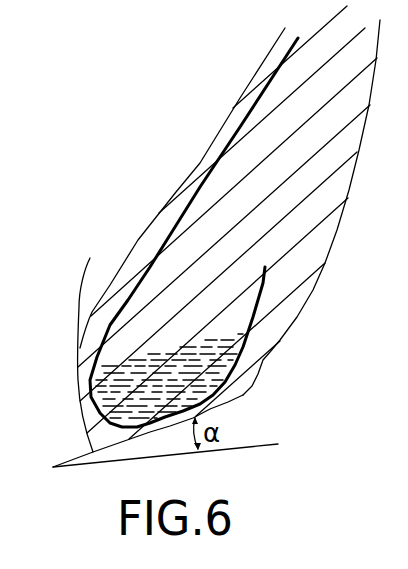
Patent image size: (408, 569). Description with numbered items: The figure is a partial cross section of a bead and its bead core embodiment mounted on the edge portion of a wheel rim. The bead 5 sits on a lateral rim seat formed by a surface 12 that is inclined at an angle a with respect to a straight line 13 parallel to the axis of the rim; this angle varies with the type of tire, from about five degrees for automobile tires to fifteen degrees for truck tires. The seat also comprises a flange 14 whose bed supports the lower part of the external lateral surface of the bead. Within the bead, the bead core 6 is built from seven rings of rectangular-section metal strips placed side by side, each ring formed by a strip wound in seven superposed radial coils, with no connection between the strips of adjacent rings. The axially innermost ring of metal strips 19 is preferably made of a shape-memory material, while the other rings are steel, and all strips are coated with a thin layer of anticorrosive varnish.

The bead 5 is at (174, 192).
The cavity/pocket filled with abradable material 6 is at (150, 343).
The surface 12 is at (121, 441).
The straight line 13 is at (168, 469).
The flange 14 is at (280, 341).
The axially innermost ring of metal strips 19 is at (91, 337).